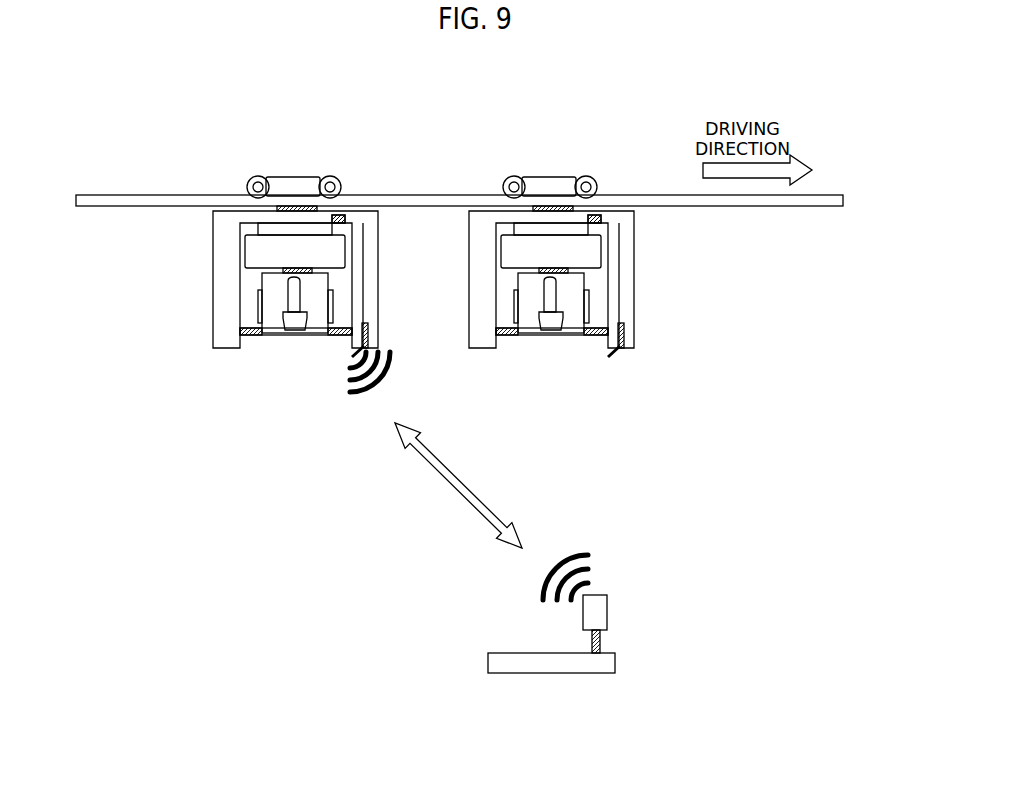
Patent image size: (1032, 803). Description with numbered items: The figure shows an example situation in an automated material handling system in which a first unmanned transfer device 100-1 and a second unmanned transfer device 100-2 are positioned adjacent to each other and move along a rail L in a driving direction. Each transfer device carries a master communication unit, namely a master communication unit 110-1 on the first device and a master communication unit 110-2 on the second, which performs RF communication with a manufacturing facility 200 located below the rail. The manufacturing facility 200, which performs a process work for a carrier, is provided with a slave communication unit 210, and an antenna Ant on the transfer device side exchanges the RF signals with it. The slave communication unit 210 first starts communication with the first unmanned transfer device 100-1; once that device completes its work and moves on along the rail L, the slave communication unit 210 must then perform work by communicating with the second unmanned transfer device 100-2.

The first unmanned transfer device 100-1 is at (578, 166).
The second unmanned transfer device 100-2 is at (322, 166).
The master communication unit 110-1 is at (600, 213).
The master communication unit 110-2 is at (344, 213).
The antenna Ant is at (367, 327).
The rail L is at (820, 192).
The manufacturing facility 200 is at (465, 698).
The slave communication unit 210 is at (608, 596).